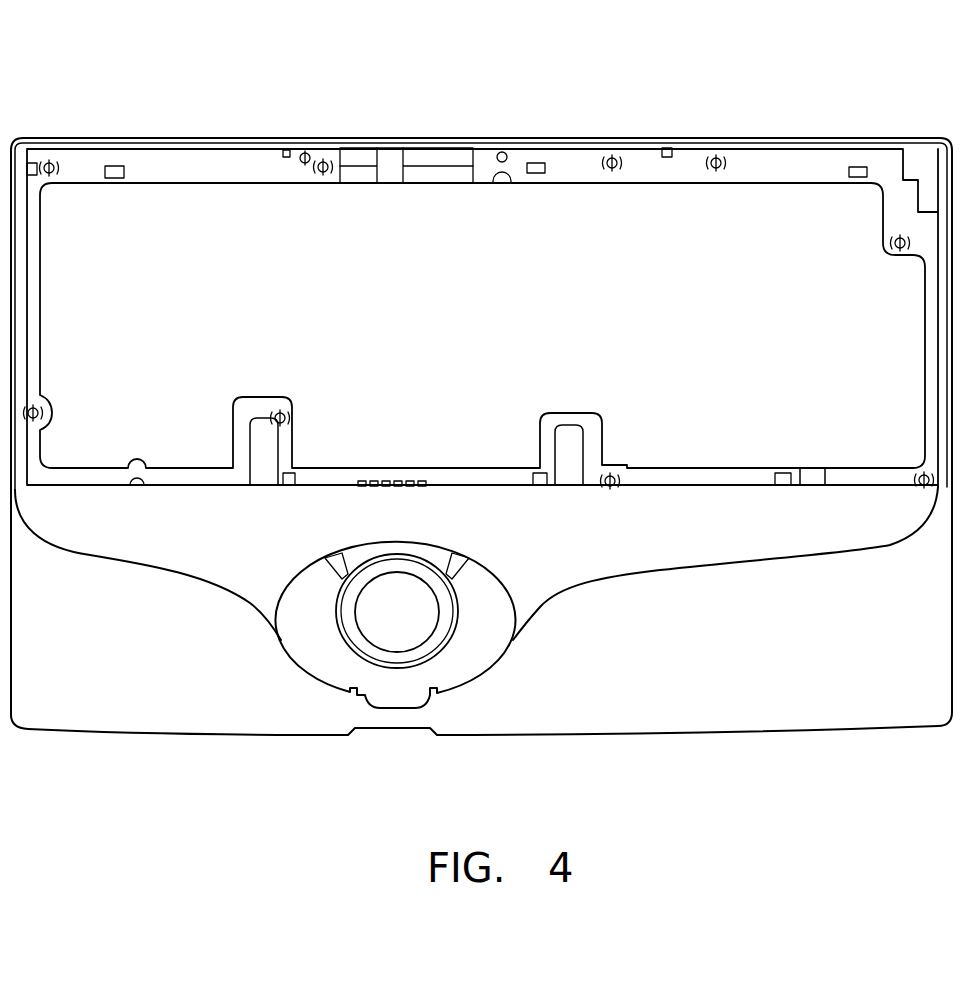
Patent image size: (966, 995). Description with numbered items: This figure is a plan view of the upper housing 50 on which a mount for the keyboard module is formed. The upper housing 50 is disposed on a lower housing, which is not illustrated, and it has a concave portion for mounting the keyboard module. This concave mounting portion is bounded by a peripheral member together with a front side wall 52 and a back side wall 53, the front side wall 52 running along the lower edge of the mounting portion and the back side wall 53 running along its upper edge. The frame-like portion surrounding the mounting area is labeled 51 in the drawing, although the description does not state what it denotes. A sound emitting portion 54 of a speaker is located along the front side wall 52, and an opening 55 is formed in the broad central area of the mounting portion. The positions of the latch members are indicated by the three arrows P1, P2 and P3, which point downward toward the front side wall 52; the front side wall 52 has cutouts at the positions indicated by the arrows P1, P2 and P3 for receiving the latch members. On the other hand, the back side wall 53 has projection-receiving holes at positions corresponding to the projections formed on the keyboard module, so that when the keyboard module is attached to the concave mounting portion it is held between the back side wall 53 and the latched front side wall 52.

The upper housing 50 is at (553, 118).
The mounting frame of the housing 51 is at (93, 470).
The front side wall 52 is at (480, 485).
The back side wall 53 is at (574, 158).
The sound emitting portion 54 is at (400, 485).
The opening 55 is at (264, 277).
The latch member position P1 is at (263, 445).
The latch member position P2 is at (572, 440).
The latch member position P3 is at (813, 460).